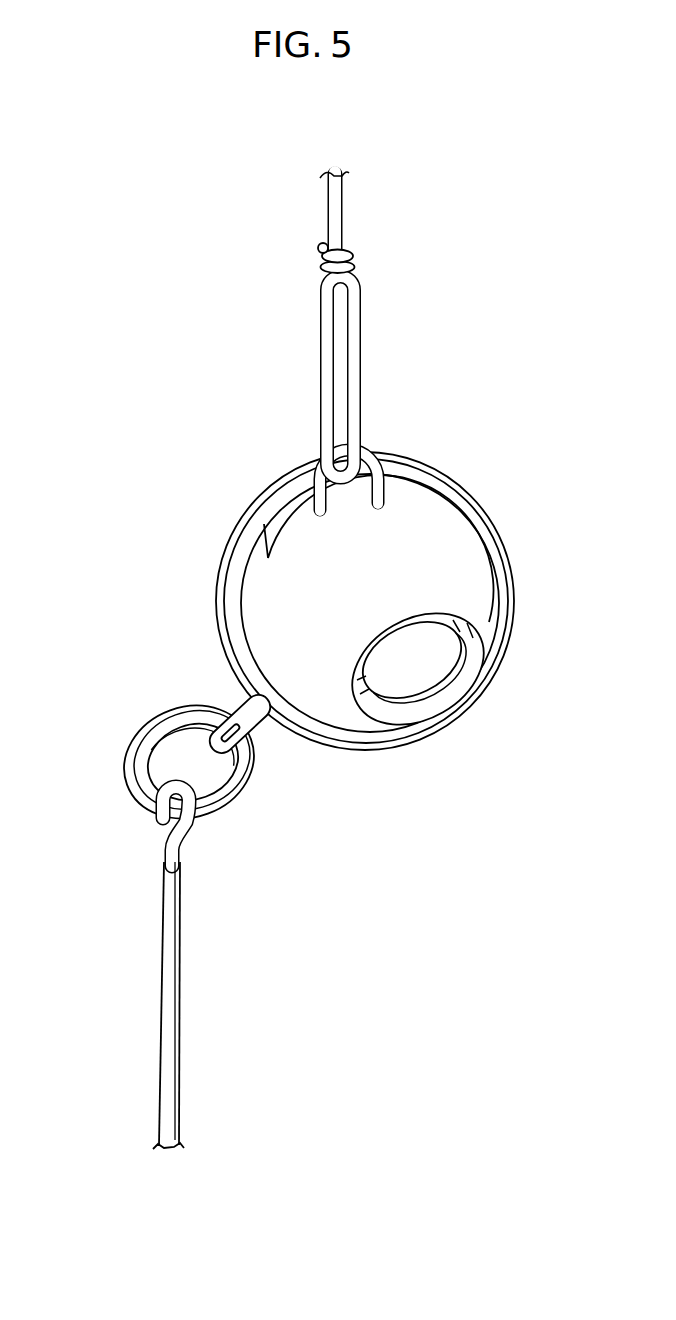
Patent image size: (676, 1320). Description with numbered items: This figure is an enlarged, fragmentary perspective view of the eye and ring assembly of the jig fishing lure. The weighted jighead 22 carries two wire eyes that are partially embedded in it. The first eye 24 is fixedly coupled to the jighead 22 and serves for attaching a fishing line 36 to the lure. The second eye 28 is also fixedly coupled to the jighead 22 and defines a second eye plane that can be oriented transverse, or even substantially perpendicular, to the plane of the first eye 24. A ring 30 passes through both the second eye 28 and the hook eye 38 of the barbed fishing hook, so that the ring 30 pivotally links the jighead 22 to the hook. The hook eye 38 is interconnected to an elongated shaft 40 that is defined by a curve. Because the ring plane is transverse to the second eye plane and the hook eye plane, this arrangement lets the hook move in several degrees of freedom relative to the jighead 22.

The weighted jighead 22 is at (268, 578).
The first eye 24 is at (320, 457).
The second eye 28 is at (260, 746).
The ring 30 is at (232, 790).
The fishing line 36 is at (360, 370).
The hook eye 38 is at (198, 808).
The elongated shaft 40 is at (162, 1003).